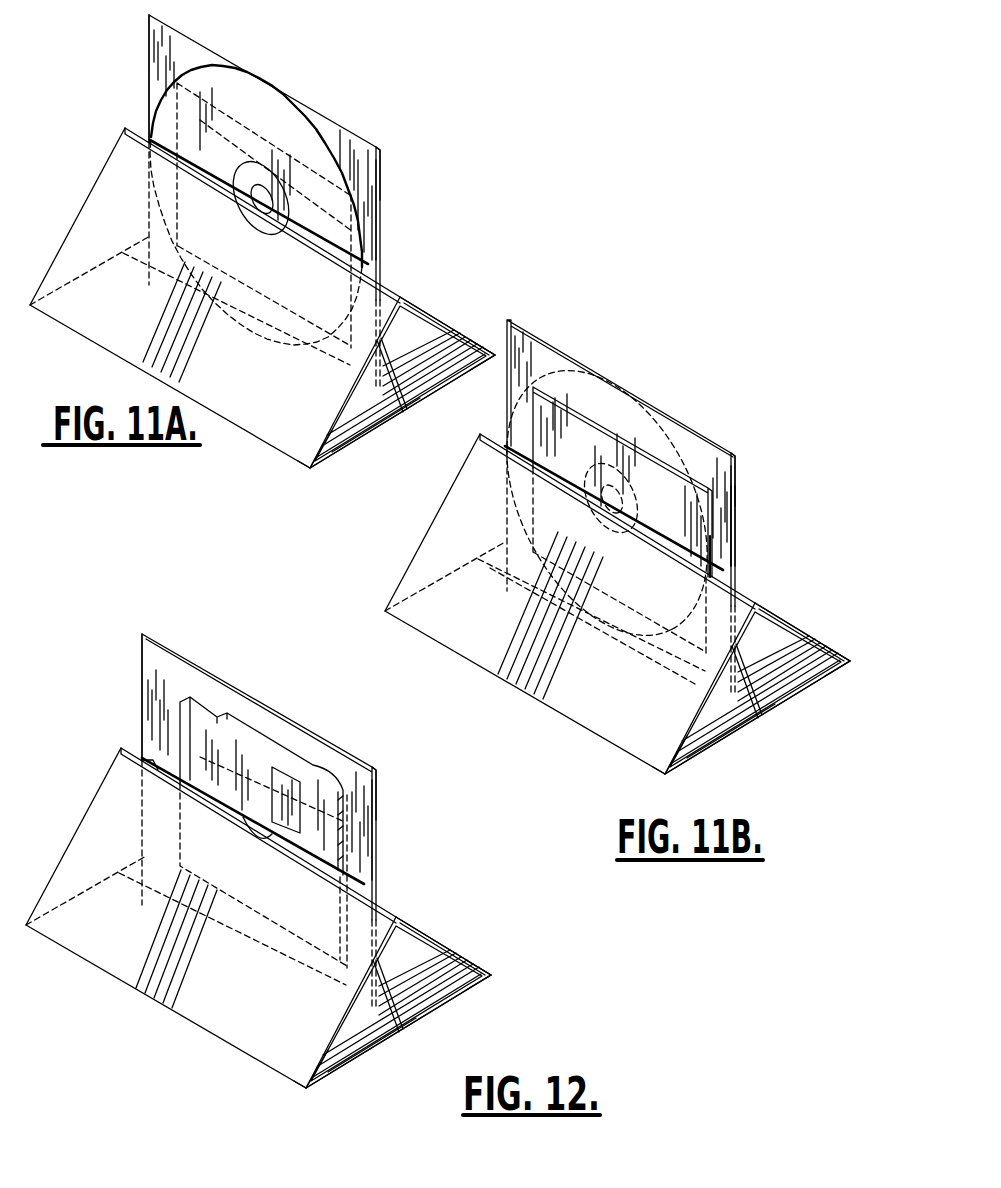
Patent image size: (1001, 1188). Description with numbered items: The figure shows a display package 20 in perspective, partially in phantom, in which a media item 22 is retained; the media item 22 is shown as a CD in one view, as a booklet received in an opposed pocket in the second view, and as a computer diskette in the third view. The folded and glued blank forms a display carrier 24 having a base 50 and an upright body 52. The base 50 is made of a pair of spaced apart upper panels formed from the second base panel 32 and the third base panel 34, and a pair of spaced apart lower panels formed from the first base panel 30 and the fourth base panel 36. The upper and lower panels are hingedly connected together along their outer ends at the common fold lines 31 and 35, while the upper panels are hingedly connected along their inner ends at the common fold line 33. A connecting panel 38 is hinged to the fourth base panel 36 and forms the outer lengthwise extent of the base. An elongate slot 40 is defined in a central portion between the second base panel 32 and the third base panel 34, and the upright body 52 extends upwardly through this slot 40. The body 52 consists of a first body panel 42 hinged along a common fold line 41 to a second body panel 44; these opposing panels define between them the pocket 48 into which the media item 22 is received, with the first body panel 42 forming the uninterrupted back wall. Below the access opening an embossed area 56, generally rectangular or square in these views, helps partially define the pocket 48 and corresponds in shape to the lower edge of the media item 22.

In FIG. 11A, the display package 20 is at (260, 255).
In FIG. 11B, the display package 20 is at (623, 534).
In FIG. 12, the display package 20 is at (287, 850).
In FIG. 11A, the media item 22 is at (277, 113).
In FIG. 11B, the media item 22 is at (607, 502).
In FIG. 12, the media item 22 is at (262, 770).
In FIG. 11A, the display carrier 24 is at (260, 292).
In FIG. 11B, the display carrier 24 is at (623, 542).
In FIG. 12, the display carrier 24 is at (287, 914).
In FIG. 11A, the first base panel 30 is at (357, 437).
In FIG. 11B, the first base panel 30 is at (757, 717).
In FIG. 12, the first base panel 30 is at (398, 1042).
In FIG. 11A, the common fold line 31 is at (310, 470).
In FIG. 11B, the common fold line 31 is at (843, 648).
In FIG. 12, the common fold line 31 is at (294, 1095).
In FIG. 11A, the second base panel 32 is at (107, 207).
In FIG. 11B, the second base panel 32 is at (803, 624).
In FIG. 12, the second base panel 32 is at (166, 918).
In FIG. 11A, the common fold line 33 is at (140, 130).
In FIG. 11B, the common fold line 33 is at (634, 521).
In FIG. 12, the common fold line 33 is at (276, 805).
In FIG. 11A, the third base panel 34 is at (443, 318).
In FIG. 11B, the third base panel 34 is at (525, 604).
In FIG. 12, the third base panel 34 is at (453, 943).
In FIG. 11A, the common fold line 35 is at (482, 355).
In FIG. 11B, the common fold line 35 is at (654, 778).
In FIG. 12, the common fold line 35 is at (507, 972).
In FIG. 11A, the fourth base panel 36 is at (380, 394).
In FIG. 11B, the fourth base panel 36 is at (741, 704).
In FIG. 12, the fourth base panel 36 is at (405, 1025).
In FIG. 11A, the connecting panel 38 is at (375, 356).
In FIG. 11B, the connecting panel 38 is at (697, 681).
In FIG. 12, the connecting panel 38 is at (396, 985).
In FIG. 11A, the elongate slot 40 is at (320, 263).
In FIG. 11B, the elongate slot 40 is at (614, 523).
In FIG. 12, the elongate slot 40 is at (253, 833).
In FIG. 11A, the common fold line 41 is at (370, 140).
In FIG. 11B, the common fold line 41 is at (732, 452).
In FIG. 12, the common fold line 41 is at (389, 774).
In FIG. 11A, the first body panel 42 is at (380, 187).
In FIG. 11B, the first body panel 42 is at (767, 493).
In FIG. 12, the first body panel 42 is at (400, 830).
In FIG. 11A, the second body panel 44 is at (267, 194).
In FIG. 11B, the second body panel 44 is at (655, 494).
In FIG. 12, the second body panel 44 is at (255, 806).
In FIG. 12, the pocket 48 is at (133, 789).
In FIG. 11A, the base 50 is at (403, 422).
In FIG. 11B, the base 50 is at (753, 740).
In FIG. 12, the base 50 is at (395, 1052).
In FIG. 11A, the body 52 is at (148, 55).
In FIG. 11B, the body 52 is at (763, 517).
In FIG. 12, the body 52 is at (111, 682).
In FIG. 11A, the embossed area 56 is at (320, 363).
In FIG. 11B, the embossed area 56 is at (619, 572).
In FIG. 12, the embossed area 56 is at (263, 894).